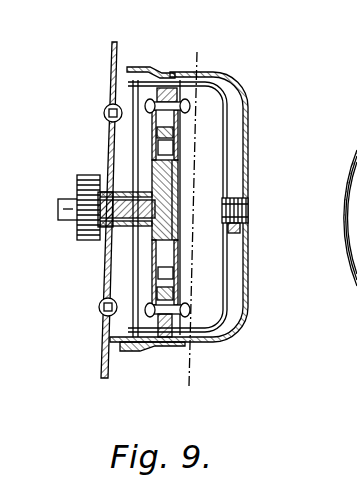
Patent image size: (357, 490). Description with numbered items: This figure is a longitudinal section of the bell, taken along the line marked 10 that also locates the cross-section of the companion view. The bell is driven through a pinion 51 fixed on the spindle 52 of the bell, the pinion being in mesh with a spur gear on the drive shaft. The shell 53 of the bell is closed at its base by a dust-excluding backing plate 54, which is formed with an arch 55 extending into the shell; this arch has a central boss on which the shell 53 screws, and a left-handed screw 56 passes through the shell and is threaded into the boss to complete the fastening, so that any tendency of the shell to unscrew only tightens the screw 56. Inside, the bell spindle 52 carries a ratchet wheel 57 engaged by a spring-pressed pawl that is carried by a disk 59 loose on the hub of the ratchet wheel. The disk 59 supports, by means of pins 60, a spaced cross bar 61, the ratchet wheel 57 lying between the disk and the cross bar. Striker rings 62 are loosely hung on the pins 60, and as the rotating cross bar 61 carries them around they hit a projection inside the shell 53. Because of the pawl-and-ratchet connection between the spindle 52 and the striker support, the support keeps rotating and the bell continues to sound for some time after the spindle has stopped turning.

The center line 10 is at (188, 213).
The pinion 51 is at (82, 241).
The spindle 52 is at (60, 205).
The shell 53 is at (243, 100).
The backing plate 54 is at (112, 72).
The arch 55 is at (238, 141).
The left-handed screw 56 is at (248, 215).
The ratchet wheel 57 is at (165, 177).
The disk 59 is at (155, 146).
The pins 60 is at (184, 105).
The cross bar 61 is at (173, 147).
The striker rings 62 is at (164, 78).